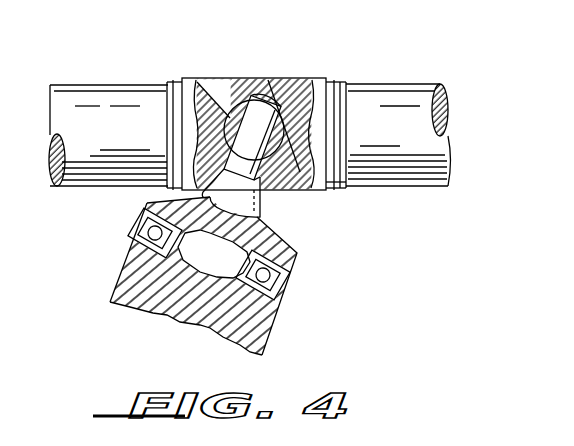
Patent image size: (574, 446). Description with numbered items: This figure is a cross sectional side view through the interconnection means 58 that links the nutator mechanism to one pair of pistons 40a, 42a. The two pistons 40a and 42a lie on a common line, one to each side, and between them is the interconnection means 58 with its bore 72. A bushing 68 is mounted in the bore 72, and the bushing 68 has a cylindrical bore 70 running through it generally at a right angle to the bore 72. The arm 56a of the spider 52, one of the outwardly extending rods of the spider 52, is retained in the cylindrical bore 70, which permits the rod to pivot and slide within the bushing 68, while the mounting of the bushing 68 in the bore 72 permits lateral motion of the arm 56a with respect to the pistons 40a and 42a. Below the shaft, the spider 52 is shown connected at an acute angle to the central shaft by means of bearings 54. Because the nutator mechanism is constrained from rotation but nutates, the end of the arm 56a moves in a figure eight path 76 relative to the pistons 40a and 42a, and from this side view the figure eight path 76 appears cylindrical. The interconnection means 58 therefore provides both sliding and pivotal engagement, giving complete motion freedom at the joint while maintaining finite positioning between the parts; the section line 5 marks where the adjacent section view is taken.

The section line 5- 5 is at (258, 118).
The piston 42a is at (84, 84).
The piston 40a is at (428, 84).
The interconnection means 58 is at (338, 67).
The bushing 68 is at (233, 80).
The figure 8 path 76 is at (249, 92).
The cylindrical bore 70 is at (285, 83).
The arm 56a is at (263, 188).
The bore 72 is at (293, 190).
The spider 52 is at (287, 240).
The bearings 54 is at (143, 240).